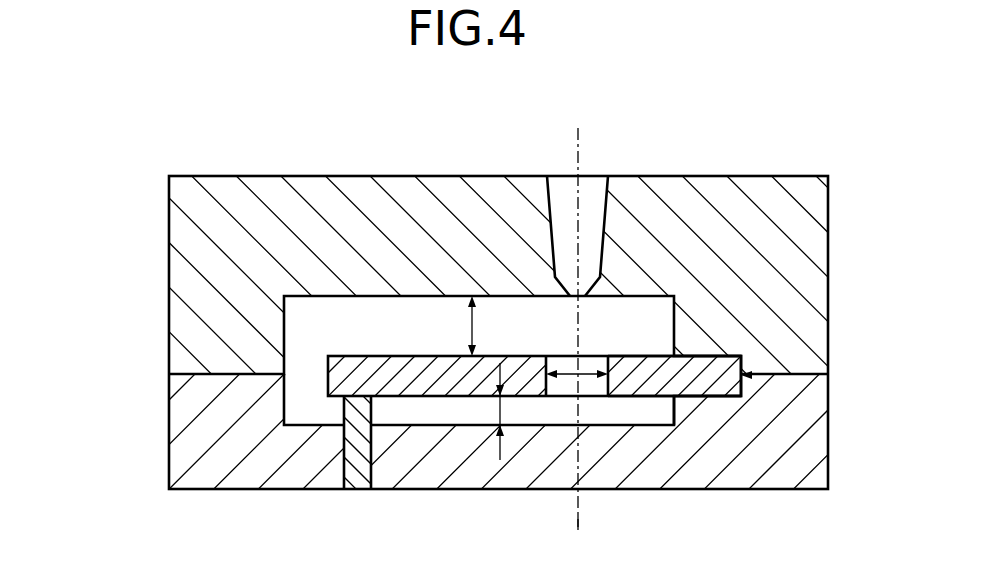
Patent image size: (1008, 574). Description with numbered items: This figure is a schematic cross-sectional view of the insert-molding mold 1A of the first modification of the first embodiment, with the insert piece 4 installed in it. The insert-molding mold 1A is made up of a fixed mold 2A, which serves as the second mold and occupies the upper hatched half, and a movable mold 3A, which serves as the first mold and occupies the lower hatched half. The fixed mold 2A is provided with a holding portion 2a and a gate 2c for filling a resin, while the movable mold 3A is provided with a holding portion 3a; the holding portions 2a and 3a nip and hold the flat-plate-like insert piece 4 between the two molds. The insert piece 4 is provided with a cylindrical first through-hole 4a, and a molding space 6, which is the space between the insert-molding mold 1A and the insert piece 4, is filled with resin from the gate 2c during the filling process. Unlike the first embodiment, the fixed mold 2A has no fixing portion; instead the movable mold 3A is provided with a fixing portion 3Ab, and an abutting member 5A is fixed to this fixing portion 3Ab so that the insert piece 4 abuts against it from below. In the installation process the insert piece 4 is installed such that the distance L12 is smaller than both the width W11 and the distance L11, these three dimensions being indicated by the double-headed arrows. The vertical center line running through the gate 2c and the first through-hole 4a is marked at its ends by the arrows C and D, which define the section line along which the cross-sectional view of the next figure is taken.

The insert-molding mold 1A is at (82, 245).
The fixed mold 2A is at (193, 258).
The movable mold 3A is at (193, 415).
The gate 2c is at (551, 213).
The insert piece 4 is at (352, 356).
The first through-hole 4a is at (597, 355).
The holding portion 2a is at (715, 355).
The holding portion 3a is at (710, 390).
The molding space 6 is at (680, 408).
The fixing portion 3Ab is at (357, 424).
The abutting member 5A is at (357, 476).
The distance L11 is at (472, 330).
The width W11 is at (577, 376).
The distance L12 is at (500, 408).
The line C-D end point C is at (583, 140).
The line C-D end point D is at (583, 523).